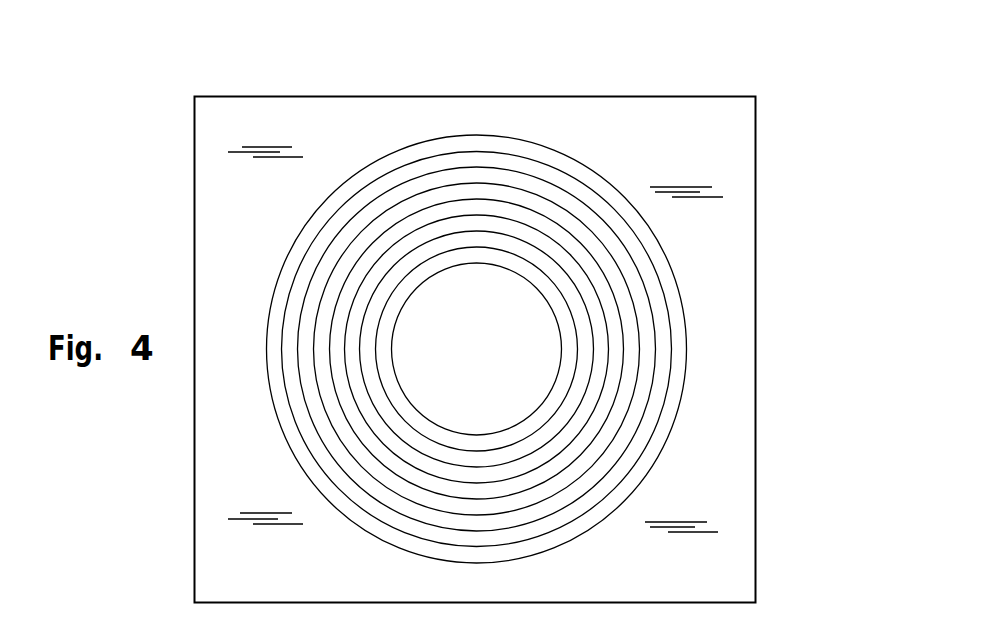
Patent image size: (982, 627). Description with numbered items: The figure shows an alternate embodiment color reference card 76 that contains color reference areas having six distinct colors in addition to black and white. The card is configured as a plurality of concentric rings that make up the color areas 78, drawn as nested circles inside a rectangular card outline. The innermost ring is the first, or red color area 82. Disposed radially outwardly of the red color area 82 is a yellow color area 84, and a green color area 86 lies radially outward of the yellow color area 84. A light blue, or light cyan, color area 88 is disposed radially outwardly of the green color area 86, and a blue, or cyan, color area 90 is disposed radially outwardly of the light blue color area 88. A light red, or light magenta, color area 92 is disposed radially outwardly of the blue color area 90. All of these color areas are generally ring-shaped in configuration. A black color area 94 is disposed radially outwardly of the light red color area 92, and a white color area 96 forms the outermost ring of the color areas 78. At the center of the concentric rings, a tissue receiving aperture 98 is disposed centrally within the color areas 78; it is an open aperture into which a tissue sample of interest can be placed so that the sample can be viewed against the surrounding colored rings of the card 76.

The color reference card 76 is at (777, 130).
The color areas 78 is at (706, 370).
The red color area 82 is at (388, 332).
The yellow color area 84 is at (378, 393).
The green color area 86 is at (577, 418).
The light blue color area 88 is at (345, 395).
The blue color area 90 is at (322, 350).
The light red color area 92 is at (338, 247).
The black color area 94 is at (351, 490).
The white color area 96 is at (340, 200).
The tissue receiving aperture 98 is at (495, 318).